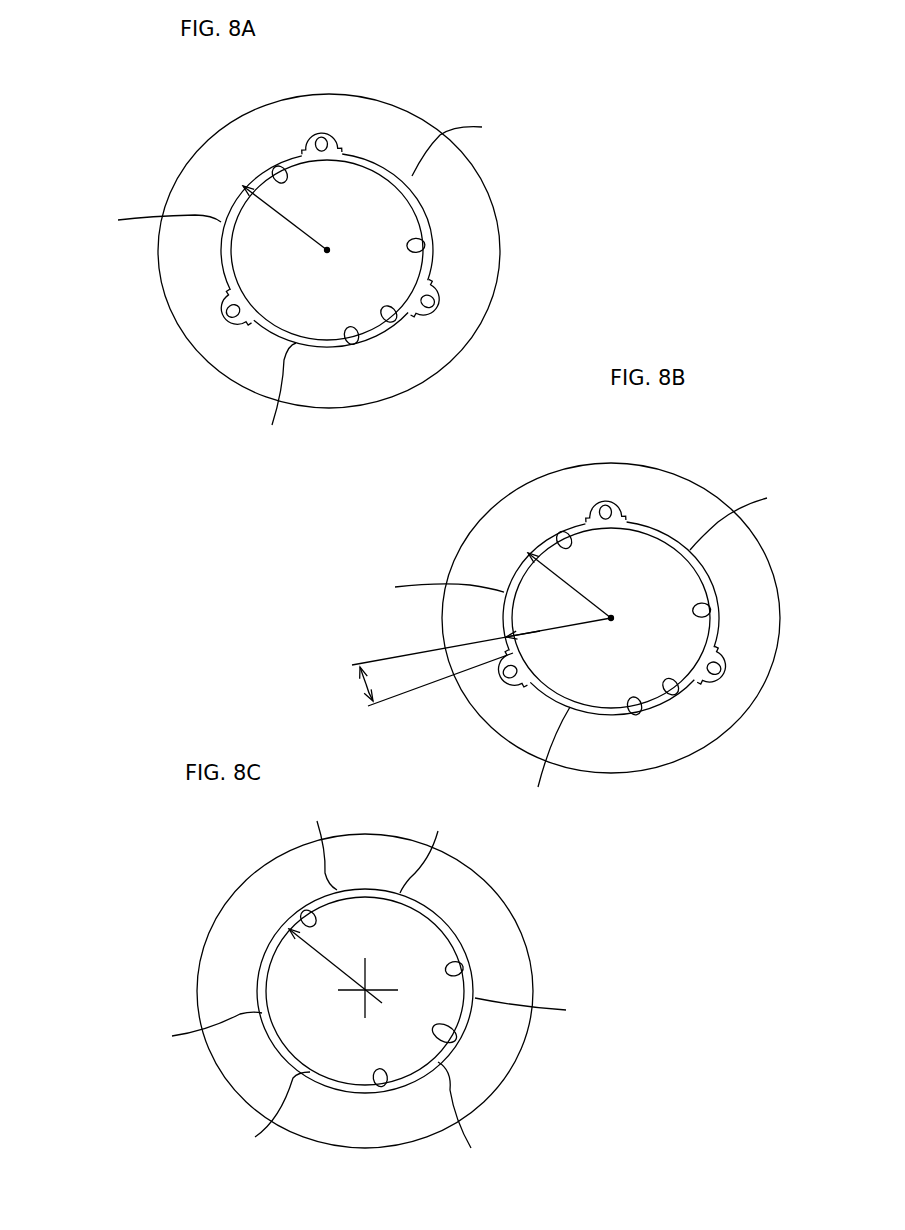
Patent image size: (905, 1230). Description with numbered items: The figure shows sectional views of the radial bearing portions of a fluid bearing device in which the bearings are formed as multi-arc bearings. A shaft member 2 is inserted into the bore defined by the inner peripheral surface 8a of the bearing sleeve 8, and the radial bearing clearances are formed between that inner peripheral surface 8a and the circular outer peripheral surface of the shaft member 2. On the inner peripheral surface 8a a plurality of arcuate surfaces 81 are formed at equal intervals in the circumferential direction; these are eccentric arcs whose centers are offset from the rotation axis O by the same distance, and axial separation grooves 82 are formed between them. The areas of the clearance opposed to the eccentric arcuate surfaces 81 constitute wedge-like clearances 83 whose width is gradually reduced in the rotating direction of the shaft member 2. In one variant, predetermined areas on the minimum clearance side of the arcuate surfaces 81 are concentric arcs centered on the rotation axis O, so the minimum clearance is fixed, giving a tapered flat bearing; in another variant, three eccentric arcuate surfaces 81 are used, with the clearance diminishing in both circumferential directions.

In FIG. 8A, the shaft member 2 is at (398, 222).
In FIG. 8B, the shaft member 2 is at (678, 587).
In FIG. 8C, the shaft member 2 is at (440, 960).
In FIG. 8A, the bearing sleeve 8 is at (392, 120).
In FIG. 8B, the bearing sleeve 8 is at (677, 488).
In FIG. 8C, the bearing sleeve 8 is at (468, 900).
In FIG. 8A, the inner peripheral surface 8a is at (402, 320).
In FIG. 8B, the inner peripheral surface 8a is at (687, 690).
In FIG. 8C, the inner peripheral surface 8a is at (434, 1044).
In FIG. 8A, the arcuate surface 81 is at (280, 162).
In FIG. 8B, the arcuate surface 81 is at (571, 537).
In FIG. 8C, the arcuate surface 81 is at (303, 917).
In FIG. 8A, the separation groove 82 is at (320, 132).
In FIG. 8B, the separation groove 82 is at (606, 500).
In FIG. 8A, the wedge-like clearance 83 is at (296, 277).
In FIG. 8B, the wedge-like clearance 83 is at (577, 644).
In FIG. 8C, the wedge-like clearance 83 is at (369, 985).
In FIG. 8A, the rotation axis O is at (326, 254).
In FIG. 8B, the rotation axis O is at (612, 620).
In FIG. 8C, the rotation axis O is at (364, 993).